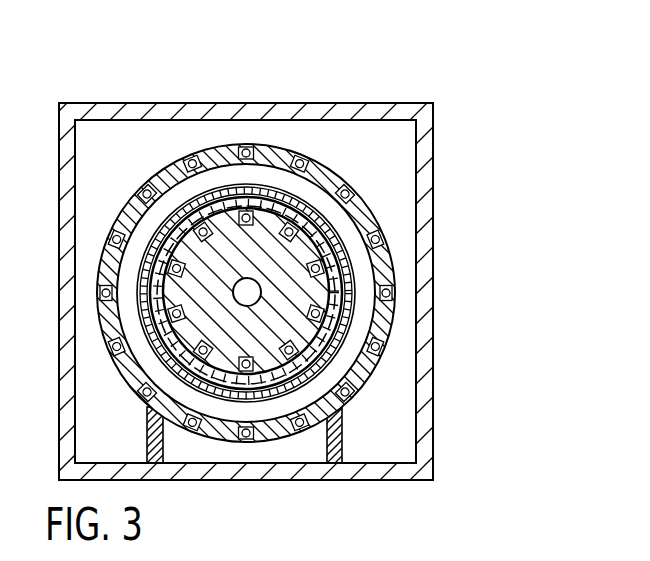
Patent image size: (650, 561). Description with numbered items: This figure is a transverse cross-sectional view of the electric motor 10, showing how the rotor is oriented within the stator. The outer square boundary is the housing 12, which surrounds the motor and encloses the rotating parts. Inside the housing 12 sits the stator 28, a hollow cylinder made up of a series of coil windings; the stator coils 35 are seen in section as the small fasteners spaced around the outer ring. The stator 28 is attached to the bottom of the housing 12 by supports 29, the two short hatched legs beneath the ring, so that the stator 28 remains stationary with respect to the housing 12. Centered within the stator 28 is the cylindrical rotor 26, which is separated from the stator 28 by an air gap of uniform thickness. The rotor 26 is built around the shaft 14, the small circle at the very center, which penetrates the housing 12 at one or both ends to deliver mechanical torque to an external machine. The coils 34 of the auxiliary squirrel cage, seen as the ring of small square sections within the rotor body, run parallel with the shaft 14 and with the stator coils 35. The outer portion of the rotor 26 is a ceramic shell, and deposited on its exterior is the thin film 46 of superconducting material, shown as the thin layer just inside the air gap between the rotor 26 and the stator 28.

The electric motor 10 is at (462, 138).
The housing 12 is at (433, 401).
The shaft 14 is at (232, 292).
The cylindrical rotor 26 is at (183, 395).
The stator 28 is at (278, 440).
The supports 29 is at (345, 445).
The coils of the auxiliary squirrel cage 34 is at (330, 306).
The stator coils 35 is at (197, 152).
The thin film of superconducting material 46 is at (172, 322).